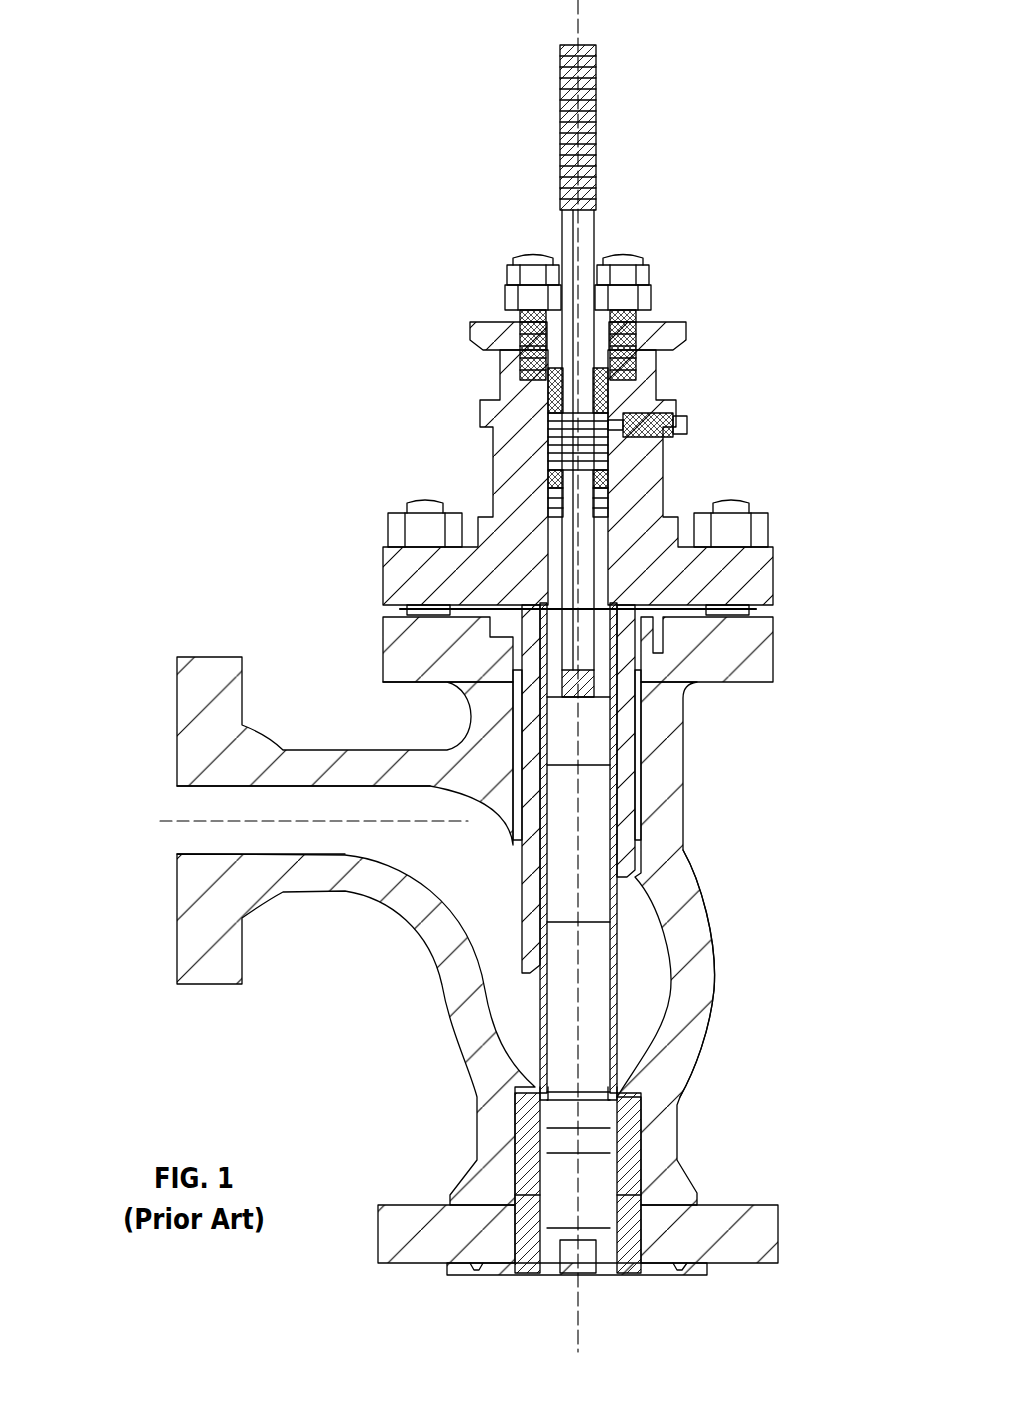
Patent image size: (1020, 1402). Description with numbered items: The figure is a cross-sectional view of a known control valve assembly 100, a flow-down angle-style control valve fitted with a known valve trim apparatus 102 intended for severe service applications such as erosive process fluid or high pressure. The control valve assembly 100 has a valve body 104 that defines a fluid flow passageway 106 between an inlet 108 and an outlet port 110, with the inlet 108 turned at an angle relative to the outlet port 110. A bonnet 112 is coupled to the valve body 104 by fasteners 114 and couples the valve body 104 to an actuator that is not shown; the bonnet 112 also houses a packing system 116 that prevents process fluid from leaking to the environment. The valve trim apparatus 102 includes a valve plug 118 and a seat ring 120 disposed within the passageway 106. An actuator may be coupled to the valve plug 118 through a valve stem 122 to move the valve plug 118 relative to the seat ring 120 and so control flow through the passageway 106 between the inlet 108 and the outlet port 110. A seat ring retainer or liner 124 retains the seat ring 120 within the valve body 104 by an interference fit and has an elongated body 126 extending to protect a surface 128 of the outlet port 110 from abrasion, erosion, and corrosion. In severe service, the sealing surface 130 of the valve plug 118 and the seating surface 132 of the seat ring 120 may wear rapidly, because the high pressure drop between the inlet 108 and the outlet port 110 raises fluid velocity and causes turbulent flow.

The control valve assembly 100 is at (719, 95).
The valve trim apparatus 102 is at (724, 1049).
The valve body 104 is at (712, 941).
The fluid flow passageway 106 is at (487, 870).
The inlet 108 is at (178, 803).
The outlet port 110 is at (583, 1275).
The bonnet 112 is at (775, 577).
The fasteners 114 is at (425, 503).
The packing system 116 is at (617, 402).
The valve plug 118 is at (570, 1117).
The seat ring 120 is at (619, 1122).
The valve stem 122 is at (594, 228).
The seat ring retainer or liner 124 is at (520, 1207).
The elongated body 126 is at (620, 1213).
The surface of the outlet port 128 is at (672, 1250).
The sealing surface 130 is at (617, 1097).
The seating surface 132 is at (547, 1100).